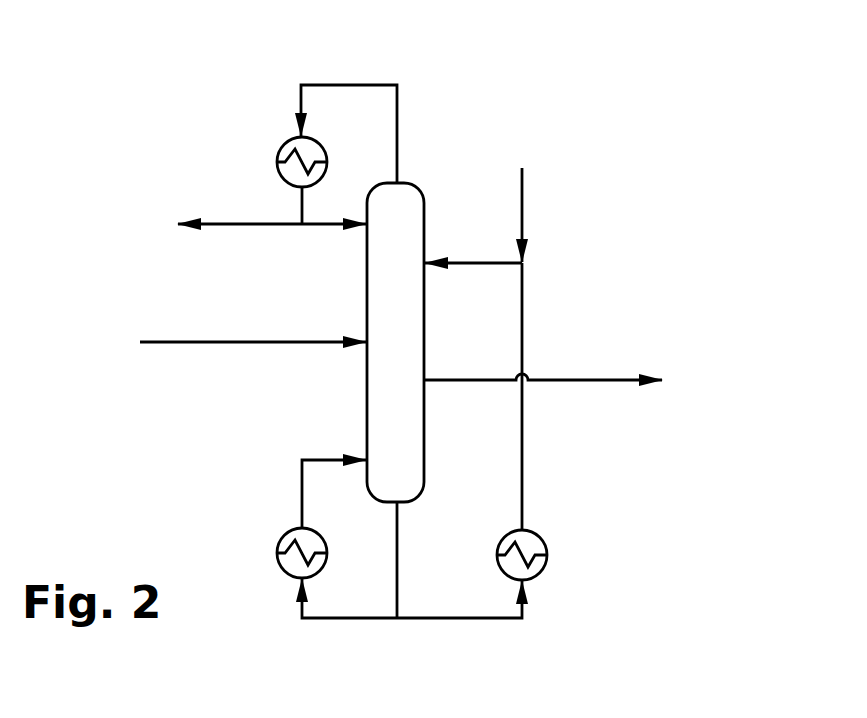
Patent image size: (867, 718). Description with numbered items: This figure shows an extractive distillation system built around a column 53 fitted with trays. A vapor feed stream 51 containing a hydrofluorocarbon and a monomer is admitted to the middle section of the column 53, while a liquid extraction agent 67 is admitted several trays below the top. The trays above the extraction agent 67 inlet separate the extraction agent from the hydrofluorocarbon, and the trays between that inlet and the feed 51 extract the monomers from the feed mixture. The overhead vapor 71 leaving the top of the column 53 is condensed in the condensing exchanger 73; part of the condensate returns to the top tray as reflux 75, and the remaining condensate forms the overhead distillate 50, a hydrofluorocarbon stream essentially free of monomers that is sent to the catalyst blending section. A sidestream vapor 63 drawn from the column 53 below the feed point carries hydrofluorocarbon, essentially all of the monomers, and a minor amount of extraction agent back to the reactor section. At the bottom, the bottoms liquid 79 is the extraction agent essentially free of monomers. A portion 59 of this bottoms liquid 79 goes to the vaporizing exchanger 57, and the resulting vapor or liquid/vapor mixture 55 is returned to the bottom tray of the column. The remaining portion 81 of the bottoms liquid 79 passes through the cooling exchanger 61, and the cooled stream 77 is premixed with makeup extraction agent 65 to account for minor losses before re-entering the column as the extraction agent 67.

The overhead distillate 50 is at (217, 225).
The vapor feed stream 51 is at (232, 345).
The column 53 is at (367, 380).
The vapor or liquid/vapor mixture 55 is at (302, 470).
The vaporizing exchanger 57 is at (282, 540).
The portion of the bottoms liquid 59 is at (372, 620).
The cooling exchanger 61 is at (543, 538).
The sidestream vapor 63 is at (565, 382).
The makeup extraction agent 65 is at (523, 202).
The liquid extraction agent 67 is at (458, 262).
The overhead vapor 71 is at (363, 83).
The condensing exchanger 73 is at (283, 143).
The reflux 75 is at (325, 226).
The cooled stream 77 is at (523, 308).
The bottoms liquid 79 is at (398, 553).
The remaining portion of the bottoms liquid 81 is at (490, 620).